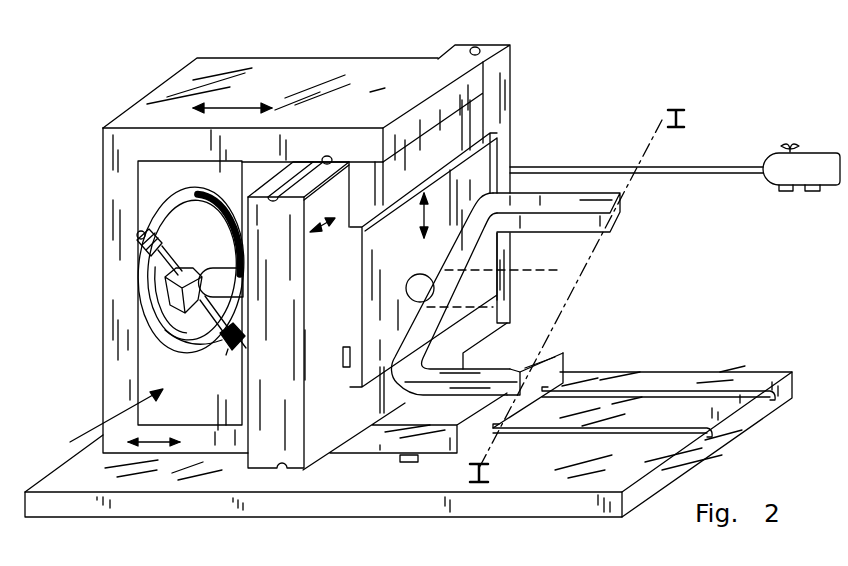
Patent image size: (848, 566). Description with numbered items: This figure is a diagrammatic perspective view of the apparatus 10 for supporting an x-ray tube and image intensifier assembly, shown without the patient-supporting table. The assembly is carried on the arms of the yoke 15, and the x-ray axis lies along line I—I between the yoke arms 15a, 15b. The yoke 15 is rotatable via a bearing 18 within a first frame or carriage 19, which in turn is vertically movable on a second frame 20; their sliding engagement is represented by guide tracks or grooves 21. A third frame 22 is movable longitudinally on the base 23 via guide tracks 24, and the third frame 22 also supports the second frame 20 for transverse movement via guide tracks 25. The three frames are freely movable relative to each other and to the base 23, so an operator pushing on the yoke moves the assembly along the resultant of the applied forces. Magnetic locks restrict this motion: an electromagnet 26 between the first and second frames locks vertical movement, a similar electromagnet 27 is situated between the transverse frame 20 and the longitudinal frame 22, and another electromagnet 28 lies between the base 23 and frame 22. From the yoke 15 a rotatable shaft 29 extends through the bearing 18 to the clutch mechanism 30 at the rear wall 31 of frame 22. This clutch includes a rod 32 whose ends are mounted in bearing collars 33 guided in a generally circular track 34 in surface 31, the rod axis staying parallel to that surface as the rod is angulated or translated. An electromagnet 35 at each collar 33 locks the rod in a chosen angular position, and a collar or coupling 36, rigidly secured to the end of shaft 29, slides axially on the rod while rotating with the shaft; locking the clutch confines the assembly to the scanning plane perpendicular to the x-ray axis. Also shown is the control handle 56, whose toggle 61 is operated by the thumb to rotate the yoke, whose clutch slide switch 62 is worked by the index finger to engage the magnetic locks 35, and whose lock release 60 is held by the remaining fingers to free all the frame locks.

The apparatus 10 is at (520, 57).
The yoke 15 is at (495, 198).
The yoke arm 15a is at (603, 207).
The yoke arm 15b is at (520, 362).
The bearing 18 is at (423, 277).
The first frame (carriage) 19 is at (490, 162).
The second frame 20 is at (512, 130).
The guide tracks (grooves) 21 is at (470, 125).
The third frame 22 is at (363, 72).
The base 23 is at (182, 508).
The guide tracks 24 is at (688, 391).
The guide tracks 25 is at (308, 173).
The electromagnet 26 is at (343, 355).
The electromagnet 27 is at (325, 458).
The electromagnet 28 is at (412, 462).
The rotatable shaft 29 is at (240, 296).
The clutch mechanism 30 is at (102, 423).
The rear wall (surface) 31 is at (147, 392).
The rod 32 is at (178, 273).
The bearing collars 33 is at (228, 354).
The circular track 34 is at (173, 202).
The electromagnet 35 is at (217, 365).
The collar (coupling) 36 is at (187, 298).
The control handle 56 is at (813, 143).
The lock release 60 is at (808, 192).
The toggle 61 is at (787, 145).
The clutch slide switch 62 is at (787, 192).